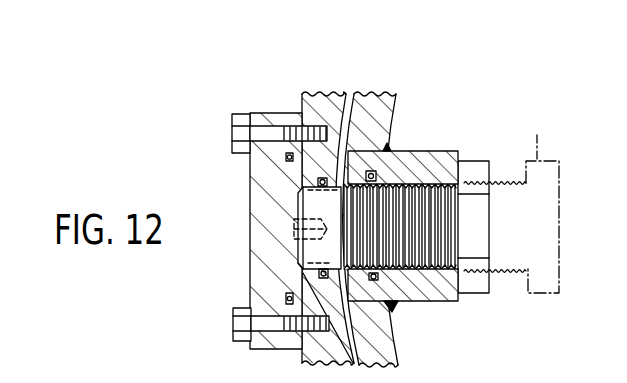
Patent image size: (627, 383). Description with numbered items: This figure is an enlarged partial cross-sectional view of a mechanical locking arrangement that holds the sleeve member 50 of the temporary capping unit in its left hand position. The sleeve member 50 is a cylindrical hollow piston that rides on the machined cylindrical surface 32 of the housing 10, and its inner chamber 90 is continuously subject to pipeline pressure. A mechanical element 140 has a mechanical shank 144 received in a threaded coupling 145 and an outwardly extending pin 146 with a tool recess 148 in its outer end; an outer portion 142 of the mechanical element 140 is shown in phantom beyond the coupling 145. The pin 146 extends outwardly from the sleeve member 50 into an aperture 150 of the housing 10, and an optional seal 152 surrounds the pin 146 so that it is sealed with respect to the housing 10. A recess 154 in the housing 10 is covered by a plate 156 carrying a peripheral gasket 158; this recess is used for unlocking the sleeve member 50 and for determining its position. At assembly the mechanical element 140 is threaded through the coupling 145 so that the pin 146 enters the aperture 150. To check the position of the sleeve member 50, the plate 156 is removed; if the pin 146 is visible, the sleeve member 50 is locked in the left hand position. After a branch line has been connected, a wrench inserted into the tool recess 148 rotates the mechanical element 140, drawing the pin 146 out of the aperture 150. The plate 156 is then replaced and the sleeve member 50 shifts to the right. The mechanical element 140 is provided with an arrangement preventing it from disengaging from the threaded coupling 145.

The housing 10 is at (318, 358).
The machined cylindrical surface 32 is at (347, 125).
The sleeve member 50 is at (388, 330).
The inner chamber 90 is at (361, 193).
The mechanical element 140 is at (508, 250).
The coupling (phantom) 142 is at (480, 160).
The mechanical shank 144 is at (419, 182).
The coupling 145 is at (406, 150).
The pin 146 is at (296, 208).
The tool recess 148 is at (293, 243).
The aperture 150 is at (297, 263).
The seal 152 is at (284, 161).
The recess 154 is at (285, 300).
The plate 156 is at (233, 147).
The peripheral gasket 158 is at (238, 329).